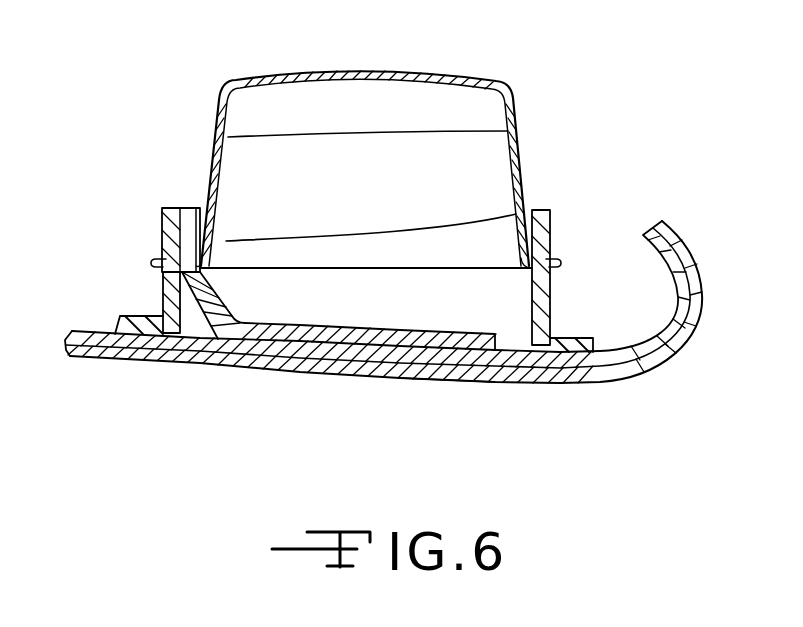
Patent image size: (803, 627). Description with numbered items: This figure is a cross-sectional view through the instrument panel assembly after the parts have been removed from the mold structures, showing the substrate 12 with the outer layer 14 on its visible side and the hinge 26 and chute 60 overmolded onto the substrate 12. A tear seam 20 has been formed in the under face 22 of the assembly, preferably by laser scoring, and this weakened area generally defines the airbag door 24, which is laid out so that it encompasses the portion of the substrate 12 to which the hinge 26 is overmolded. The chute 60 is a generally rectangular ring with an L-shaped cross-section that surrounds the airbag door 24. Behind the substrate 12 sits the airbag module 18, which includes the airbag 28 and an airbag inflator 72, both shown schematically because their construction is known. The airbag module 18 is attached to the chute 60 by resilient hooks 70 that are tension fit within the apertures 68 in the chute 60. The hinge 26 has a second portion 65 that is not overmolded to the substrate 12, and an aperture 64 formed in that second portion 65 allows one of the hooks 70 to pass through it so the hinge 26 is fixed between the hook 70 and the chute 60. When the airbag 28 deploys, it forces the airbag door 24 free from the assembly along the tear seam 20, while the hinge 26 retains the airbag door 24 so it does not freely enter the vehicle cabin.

The substrate 12 is at (580, 382).
The outer layer 14 is at (220, 365).
The airbag module 18 is at (515, 91).
The tear seam 20 is at (170, 356).
The under face 22 is at (273, 360).
The airbag door 24 is at (453, 383).
The hinge 26 is at (189, 208).
The airbag 28 is at (480, 170).
The chute 60 is at (160, 287).
The aperture 64 is at (190, 243).
The second portion 65 is at (168, 224).
The apertures 68 is at (160, 269).
The resilient hooks 70 is at (158, 263).
The airbag inflator 72 is at (290, 115).